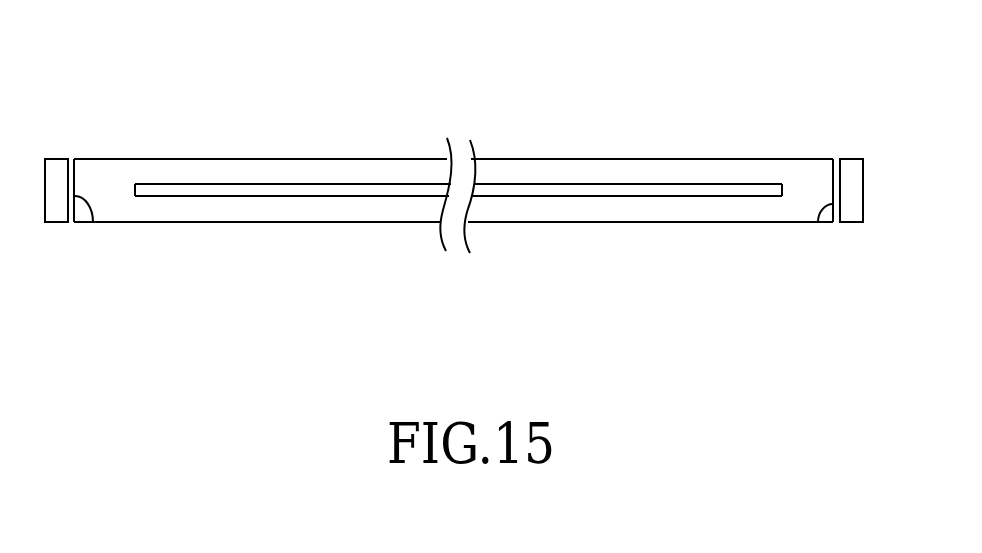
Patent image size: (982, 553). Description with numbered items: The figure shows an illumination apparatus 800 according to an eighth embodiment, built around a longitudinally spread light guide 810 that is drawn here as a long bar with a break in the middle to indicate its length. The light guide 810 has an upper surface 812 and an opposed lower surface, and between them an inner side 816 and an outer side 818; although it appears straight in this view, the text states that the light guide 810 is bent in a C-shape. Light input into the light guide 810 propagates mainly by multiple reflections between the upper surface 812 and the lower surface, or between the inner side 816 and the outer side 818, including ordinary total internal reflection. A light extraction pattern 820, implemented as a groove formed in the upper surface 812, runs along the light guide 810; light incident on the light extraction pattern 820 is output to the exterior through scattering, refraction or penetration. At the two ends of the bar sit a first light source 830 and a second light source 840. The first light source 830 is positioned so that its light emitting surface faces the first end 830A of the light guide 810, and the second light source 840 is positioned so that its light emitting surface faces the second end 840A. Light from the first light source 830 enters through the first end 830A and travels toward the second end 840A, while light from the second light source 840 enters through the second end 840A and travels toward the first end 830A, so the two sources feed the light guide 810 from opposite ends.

The illumination apparatus 800 is at (543, 58).
The light guide 810 is at (372, 90).
The upper surface 812 is at (320, 174).
The inner side 816 is at (408, 157).
The outer side 818 is at (298, 223).
The light extraction pattern 820 is at (207, 184).
The first light source 830 is at (56, 157).
The first end 830A is at (92, 223).
The second light source 840 is at (851, 157).
The second end 840A is at (817, 223).